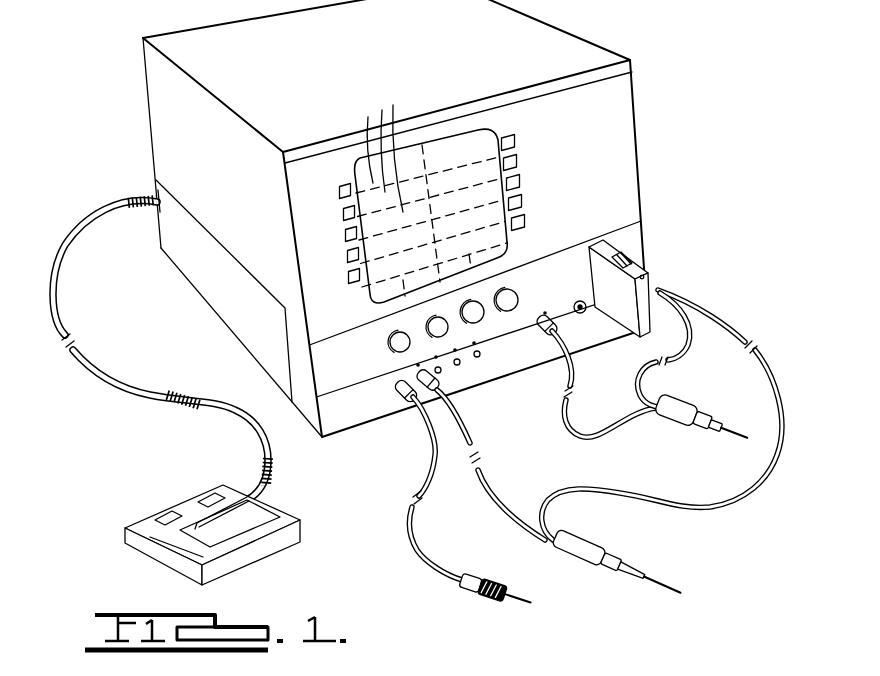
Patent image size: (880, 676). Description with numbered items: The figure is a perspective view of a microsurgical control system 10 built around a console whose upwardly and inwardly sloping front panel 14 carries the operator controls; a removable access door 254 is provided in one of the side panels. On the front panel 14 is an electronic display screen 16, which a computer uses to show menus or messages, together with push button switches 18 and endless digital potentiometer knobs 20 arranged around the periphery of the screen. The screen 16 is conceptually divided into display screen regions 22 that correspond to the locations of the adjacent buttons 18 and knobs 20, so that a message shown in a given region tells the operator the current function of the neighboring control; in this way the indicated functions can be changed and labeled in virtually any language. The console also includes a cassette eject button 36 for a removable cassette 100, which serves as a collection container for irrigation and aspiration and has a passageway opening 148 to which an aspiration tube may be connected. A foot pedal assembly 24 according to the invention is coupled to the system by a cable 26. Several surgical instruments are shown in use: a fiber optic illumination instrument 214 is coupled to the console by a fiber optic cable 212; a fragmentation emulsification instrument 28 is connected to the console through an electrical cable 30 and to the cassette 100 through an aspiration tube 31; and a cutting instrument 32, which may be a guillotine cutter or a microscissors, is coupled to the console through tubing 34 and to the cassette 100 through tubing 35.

The microsurgical control system 10 is at (706, 68).
The front panel 14 is at (620, 148).
The electronic display screen 16 is at (467, 148).
The push button switches 18 is at (515, 183).
The digital potentiometer knobs 20 is at (508, 309).
The display screen regions 22 is at (382, 149).
The foot pedal assembly 24 is at (182, 497).
The keypad cable 26 is at (118, 382).
The fragmentation emulsification instrument 28 is at (593, 557).
The electrical cable 30 is at (493, 502).
The aspiration tube 31 is at (720, 507).
The cutting instrument 32 is at (680, 422).
The tubing 34 is at (580, 440).
The tubing 35 is at (713, 352).
The cassette eject button 36 is at (581, 300).
The cassette 100 is at (620, 310).
The passageway opening 148 is at (645, 277).
The fiber optic cable 212 is at (408, 523).
The fiber optic illumination instrument 214 is at (483, 594).
The removable access door 254 is at (215, 290).